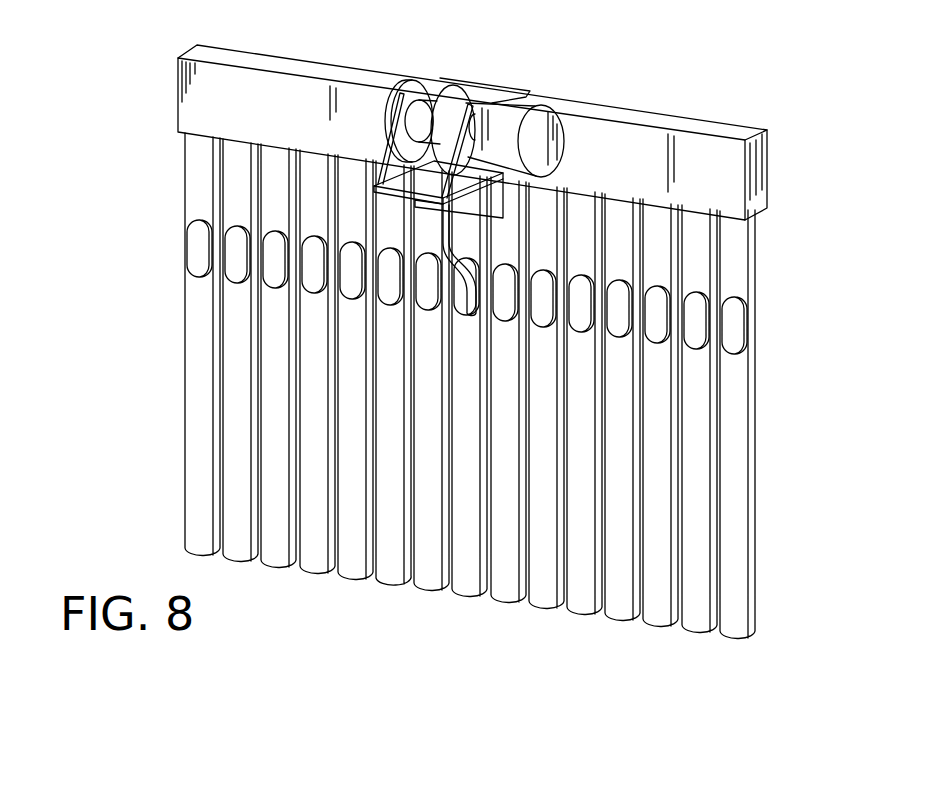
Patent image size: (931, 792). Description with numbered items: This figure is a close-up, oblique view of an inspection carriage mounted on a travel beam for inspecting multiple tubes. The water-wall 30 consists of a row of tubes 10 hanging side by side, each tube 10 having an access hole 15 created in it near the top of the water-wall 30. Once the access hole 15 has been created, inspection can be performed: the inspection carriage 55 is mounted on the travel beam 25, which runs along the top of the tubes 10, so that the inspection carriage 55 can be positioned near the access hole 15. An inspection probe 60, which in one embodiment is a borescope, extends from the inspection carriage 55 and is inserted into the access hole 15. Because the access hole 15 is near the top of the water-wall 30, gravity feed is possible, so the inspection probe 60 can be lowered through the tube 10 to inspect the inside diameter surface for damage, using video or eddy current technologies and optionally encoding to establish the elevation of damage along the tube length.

The water-wall 30 is at (148, 70).
The travel beam 25 is at (698, 147).
The inspection carriage 55 is at (487, 80).
The inspection probe 60 is at (452, 257).
The tube 10 is at (735, 561).
The access hole 15 is at (733, 316).